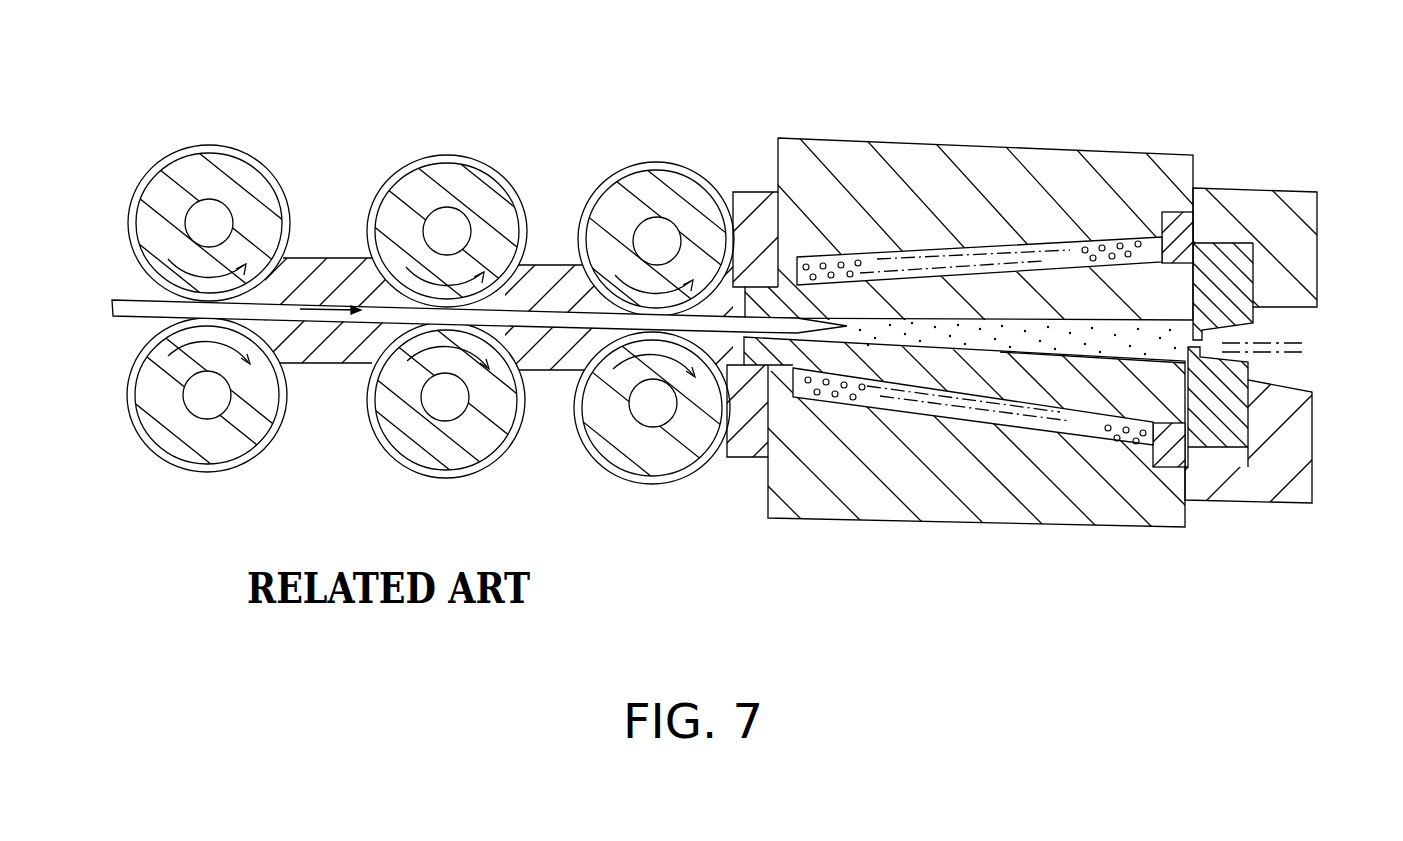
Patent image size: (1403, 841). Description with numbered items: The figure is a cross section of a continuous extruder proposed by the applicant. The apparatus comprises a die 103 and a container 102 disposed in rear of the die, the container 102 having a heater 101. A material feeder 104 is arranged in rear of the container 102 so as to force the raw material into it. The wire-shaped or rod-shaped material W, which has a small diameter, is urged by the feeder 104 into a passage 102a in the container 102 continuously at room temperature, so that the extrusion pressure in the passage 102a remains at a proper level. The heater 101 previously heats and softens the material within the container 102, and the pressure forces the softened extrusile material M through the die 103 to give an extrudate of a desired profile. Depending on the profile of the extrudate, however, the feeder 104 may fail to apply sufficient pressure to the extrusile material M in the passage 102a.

The heater 101 is at (958, 245).
The container 102 is at (1053, 185).
The passage 102a is at (1072, 365).
The die 103 is at (1246, 292).
The material feeder 104 is at (455, 140).
The wire-shaped or rod-shaped material W is at (137, 298).
The extrusile material M is at (1007, 338).